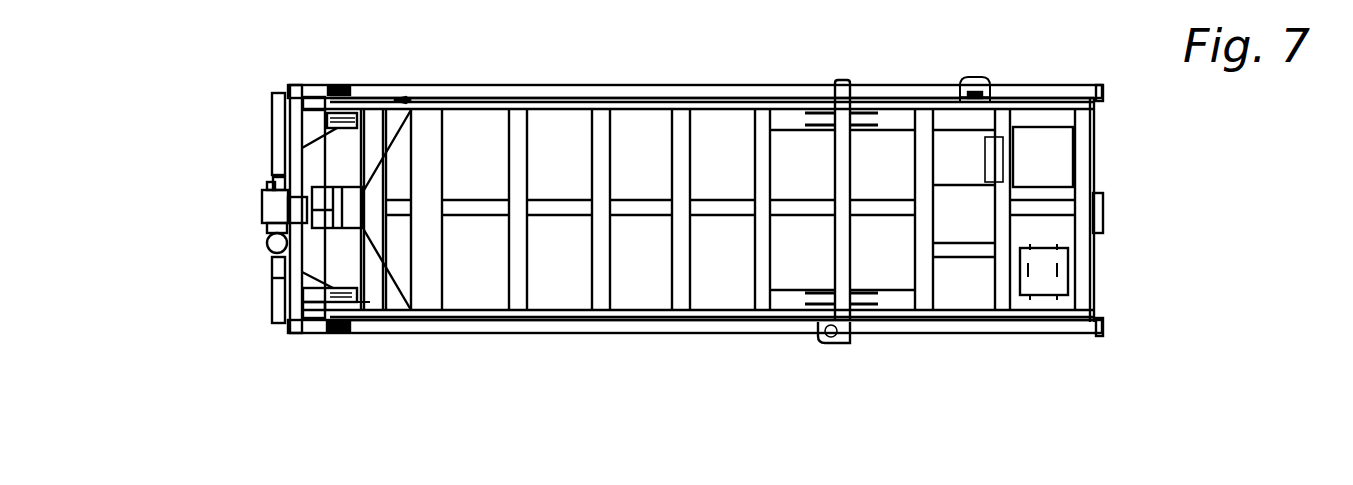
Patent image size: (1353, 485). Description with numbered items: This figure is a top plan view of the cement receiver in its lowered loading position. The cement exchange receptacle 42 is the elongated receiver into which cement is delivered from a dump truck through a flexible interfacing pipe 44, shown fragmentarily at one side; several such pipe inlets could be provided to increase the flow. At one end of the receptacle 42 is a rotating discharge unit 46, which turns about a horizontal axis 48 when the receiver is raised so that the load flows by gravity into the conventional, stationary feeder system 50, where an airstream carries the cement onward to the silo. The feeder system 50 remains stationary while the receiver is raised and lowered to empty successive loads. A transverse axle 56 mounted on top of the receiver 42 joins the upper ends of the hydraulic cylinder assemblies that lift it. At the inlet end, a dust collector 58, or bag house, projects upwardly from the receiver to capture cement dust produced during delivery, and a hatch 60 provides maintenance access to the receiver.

The cement exchange receptacle 42 is at (541, 336).
The flexible interfacing pipe 44 is at (1102, 212).
The rotating discharge unit 46 is at (328, 195).
The horizontal axis 48 is at (333, 333).
The feeder system 50 is at (265, 208).
The transverse axle 56 is at (852, 178).
The dust collector 58 is at (1068, 122).
The hatch 60 is at (1067, 285).